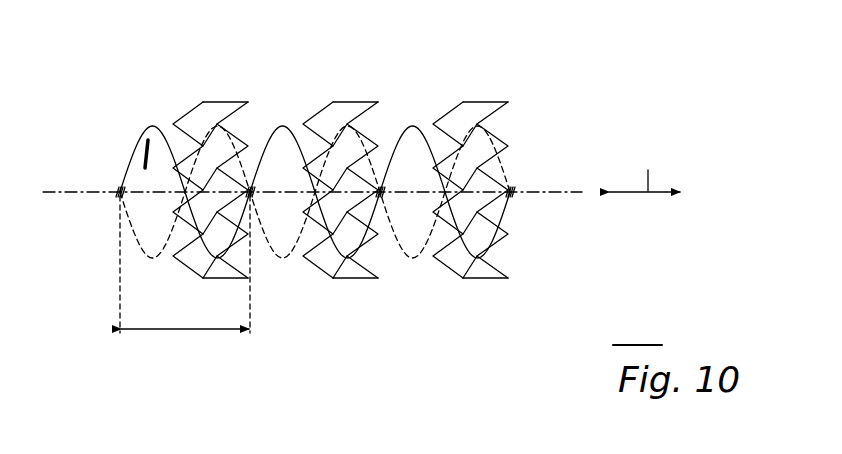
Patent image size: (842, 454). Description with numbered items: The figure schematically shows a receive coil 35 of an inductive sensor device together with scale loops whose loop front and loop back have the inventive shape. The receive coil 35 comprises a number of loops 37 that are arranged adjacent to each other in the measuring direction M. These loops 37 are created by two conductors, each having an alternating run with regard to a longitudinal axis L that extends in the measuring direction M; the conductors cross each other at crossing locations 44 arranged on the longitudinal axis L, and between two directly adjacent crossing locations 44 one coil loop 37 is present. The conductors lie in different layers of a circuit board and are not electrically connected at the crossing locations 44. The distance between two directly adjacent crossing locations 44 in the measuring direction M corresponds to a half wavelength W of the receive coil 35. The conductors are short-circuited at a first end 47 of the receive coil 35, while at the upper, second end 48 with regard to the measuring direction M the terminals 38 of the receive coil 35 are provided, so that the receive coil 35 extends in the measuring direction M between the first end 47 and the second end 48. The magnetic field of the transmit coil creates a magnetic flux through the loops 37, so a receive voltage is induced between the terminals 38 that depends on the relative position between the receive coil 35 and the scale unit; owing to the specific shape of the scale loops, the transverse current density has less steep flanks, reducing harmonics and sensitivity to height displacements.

The receive coil 35 is at (316, 190).
The loops 37 is at (149, 125).
The terminals 38 is at (508, 190).
The crossing locations 44 is at (316, 194).
The first end 47 is at (120, 193).
The second end 48 is at (513, 187).
The longitudinal axis L is at (48, 190).
The measuring direction M is at (644, 165).
The half wavelength W is at (180, 330).